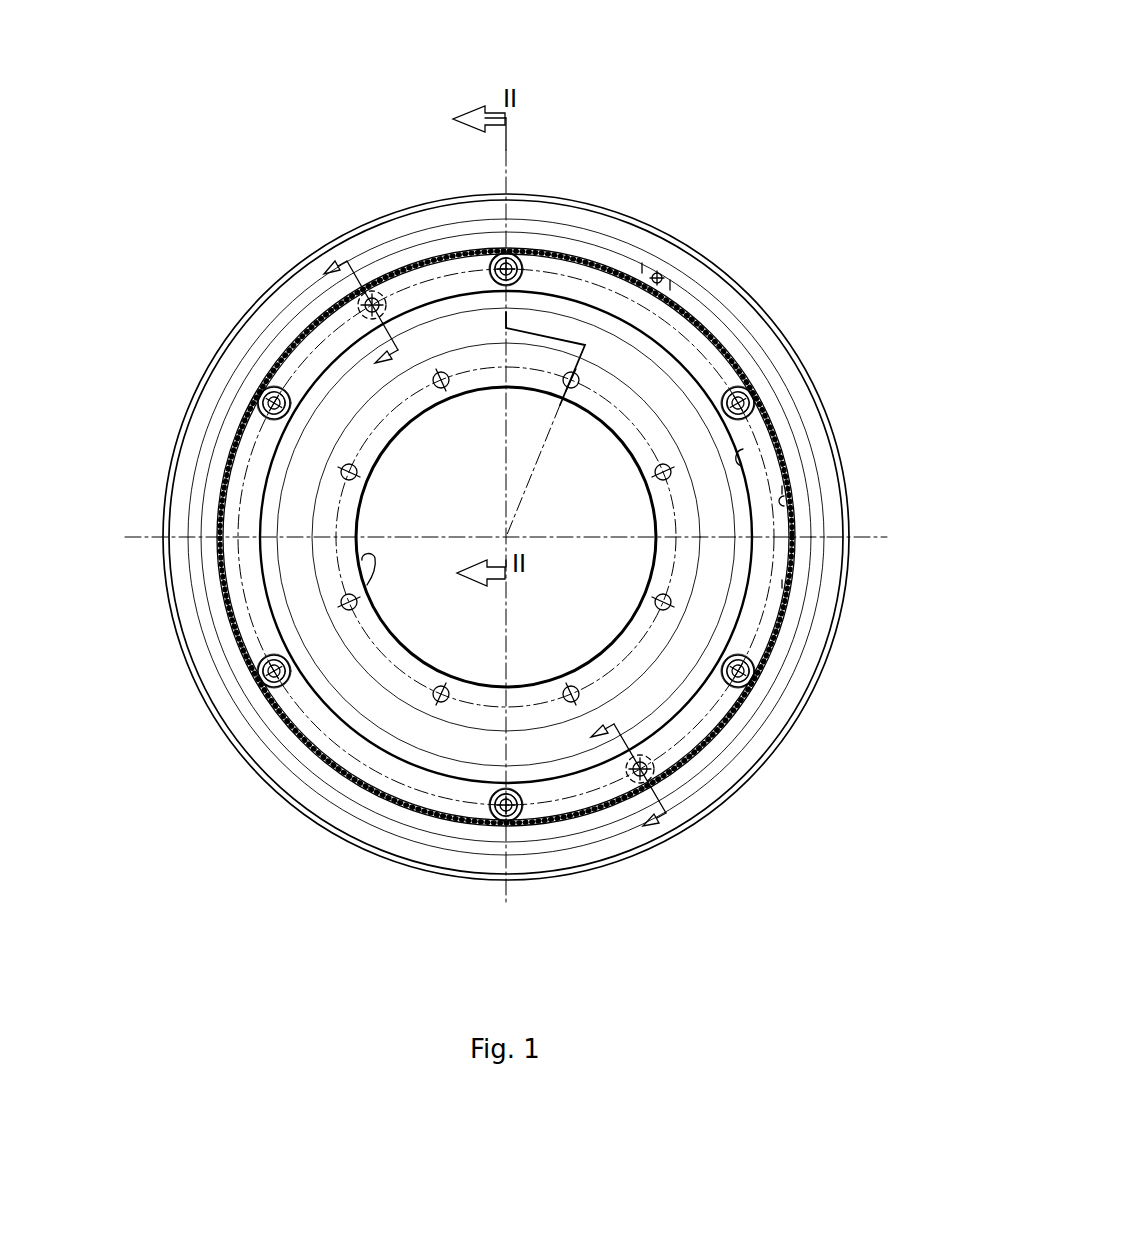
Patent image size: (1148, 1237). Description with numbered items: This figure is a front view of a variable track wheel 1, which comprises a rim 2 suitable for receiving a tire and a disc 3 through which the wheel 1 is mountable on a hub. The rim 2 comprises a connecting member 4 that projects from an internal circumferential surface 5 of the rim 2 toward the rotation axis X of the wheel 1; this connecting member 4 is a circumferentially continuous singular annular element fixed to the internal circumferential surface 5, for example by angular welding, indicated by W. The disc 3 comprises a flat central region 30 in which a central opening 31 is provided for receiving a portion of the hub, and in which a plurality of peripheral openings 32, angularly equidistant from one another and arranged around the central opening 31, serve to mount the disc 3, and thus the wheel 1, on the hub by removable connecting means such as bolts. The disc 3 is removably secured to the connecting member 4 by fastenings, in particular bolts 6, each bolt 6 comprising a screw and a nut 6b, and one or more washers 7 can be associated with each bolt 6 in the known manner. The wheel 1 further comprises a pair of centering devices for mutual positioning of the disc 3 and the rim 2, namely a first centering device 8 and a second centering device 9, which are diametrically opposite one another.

The variable track wheel 1 is at (310, 95).
The rim 2 is at (662, 230).
The disc 3 is at (660, 392).
The connecting member 4 is at (743, 449).
The internal circumferential surface 5 is at (790, 500).
The bolt 6 is at (570, 160).
The nut 6b is at (522, 245).
The washer 7 is at (527, 280).
The first centering device 8 is at (670, 761).
The second centering device 9 is at (388, 283).
The flat central region 30 is at (387, 710).
The central opening 31 is at (367, 585).
The peripheral openings 32 is at (342, 473).
The angular welding W is at (792, 597).
The rotation axis X is at (503, 530).